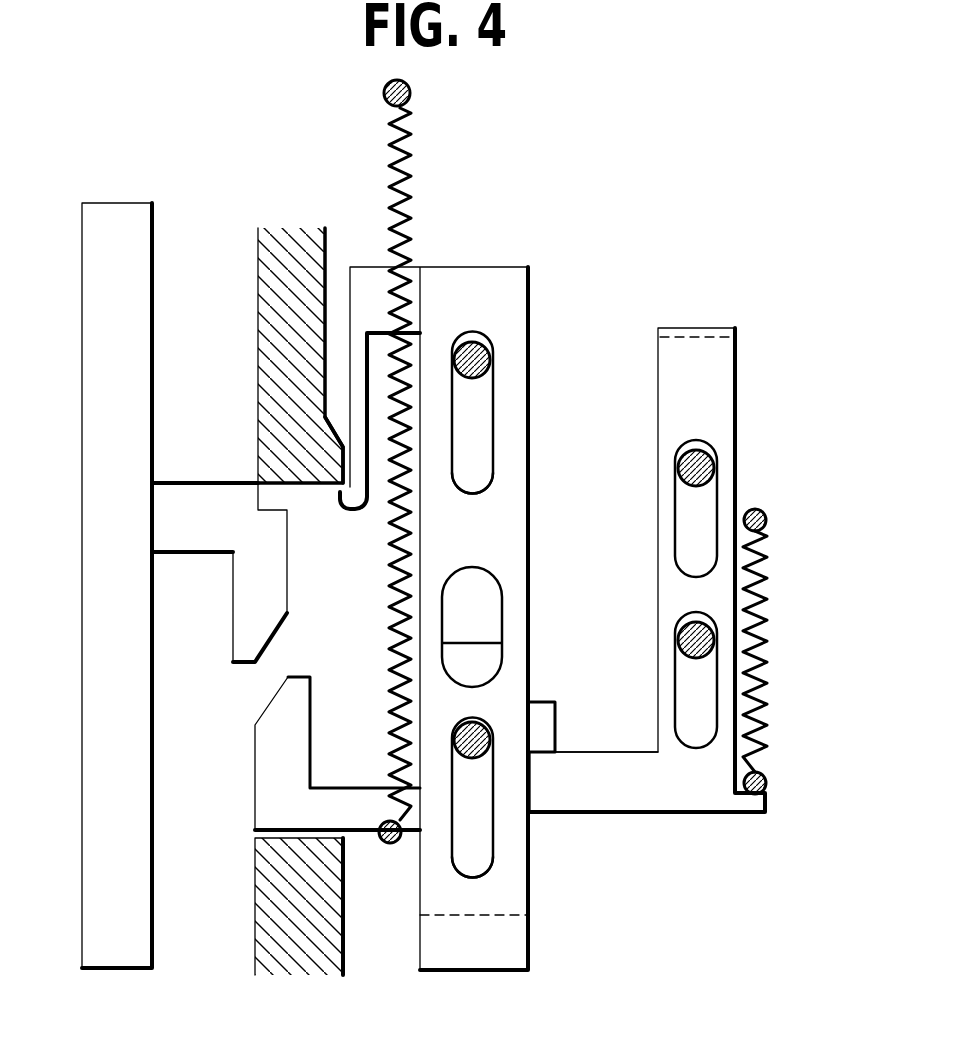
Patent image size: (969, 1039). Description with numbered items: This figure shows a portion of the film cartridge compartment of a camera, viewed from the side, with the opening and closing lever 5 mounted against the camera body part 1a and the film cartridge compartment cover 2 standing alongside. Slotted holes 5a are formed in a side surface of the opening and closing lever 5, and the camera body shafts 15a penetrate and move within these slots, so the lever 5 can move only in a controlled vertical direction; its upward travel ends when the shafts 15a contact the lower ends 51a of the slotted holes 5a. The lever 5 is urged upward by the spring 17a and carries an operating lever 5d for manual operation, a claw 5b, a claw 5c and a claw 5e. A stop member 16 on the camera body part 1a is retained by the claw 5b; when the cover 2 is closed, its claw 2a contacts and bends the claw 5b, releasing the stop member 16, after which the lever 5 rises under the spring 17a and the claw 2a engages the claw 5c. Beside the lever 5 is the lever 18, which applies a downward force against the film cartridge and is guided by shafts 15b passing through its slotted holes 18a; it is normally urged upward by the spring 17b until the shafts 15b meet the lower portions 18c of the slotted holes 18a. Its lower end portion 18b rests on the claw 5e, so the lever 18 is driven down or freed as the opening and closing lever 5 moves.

The film cartridge compartment cover 2 is at (95, 413).
The claw 2a is at (240, 612).
The camera body part 1a is at (272, 300).
The stop member 16 is at (330, 443).
The opening and closing lever 5 is at (470, 945).
The slotted holes 5a is at (452, 408).
The claw 5b is at (352, 515).
The claw 5c is at (268, 768).
The operating lever 5d is at (478, 583).
The claw 5e is at (548, 722).
The lower ends of slotted holes 51a is at (475, 490).
The camera body shafts 15a is at (480, 355).
The shafts 15b is at (718, 448).
The spring 17a is at (410, 170).
The spring 17b is at (763, 585).
The lever 18 is at (712, 362).
The slotted holes 18a is at (718, 505).
The lower end portion 18b is at (620, 795).
The lower portions of slotted holes 18c is at (765, 537).